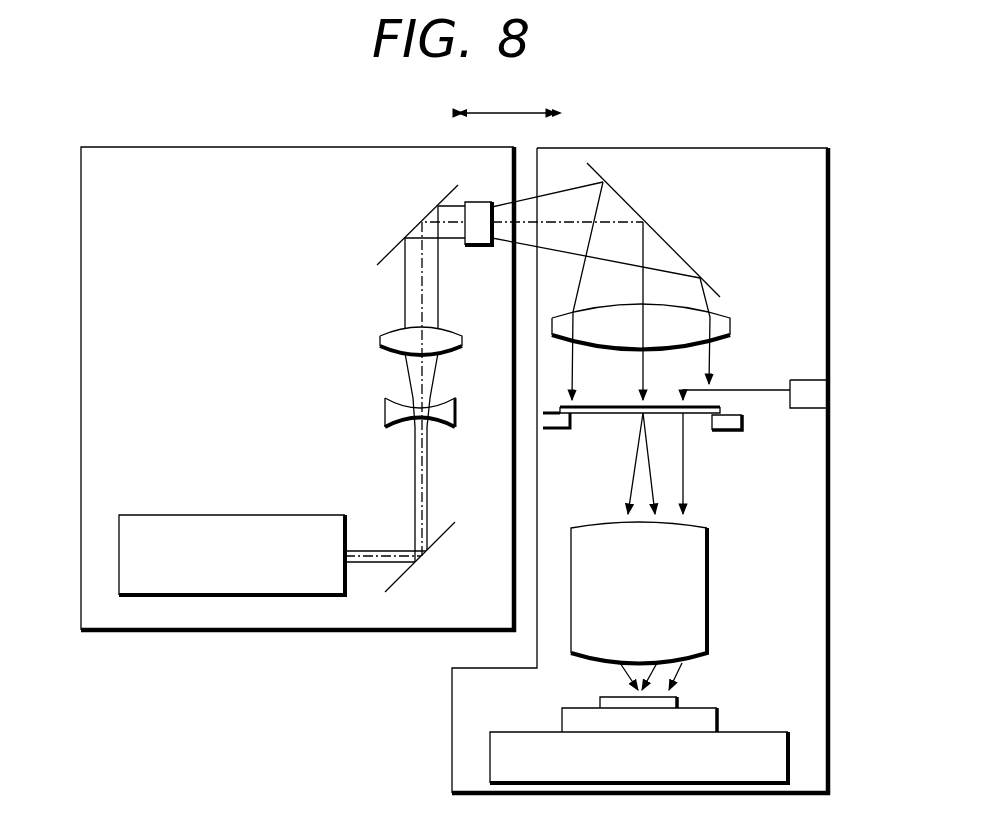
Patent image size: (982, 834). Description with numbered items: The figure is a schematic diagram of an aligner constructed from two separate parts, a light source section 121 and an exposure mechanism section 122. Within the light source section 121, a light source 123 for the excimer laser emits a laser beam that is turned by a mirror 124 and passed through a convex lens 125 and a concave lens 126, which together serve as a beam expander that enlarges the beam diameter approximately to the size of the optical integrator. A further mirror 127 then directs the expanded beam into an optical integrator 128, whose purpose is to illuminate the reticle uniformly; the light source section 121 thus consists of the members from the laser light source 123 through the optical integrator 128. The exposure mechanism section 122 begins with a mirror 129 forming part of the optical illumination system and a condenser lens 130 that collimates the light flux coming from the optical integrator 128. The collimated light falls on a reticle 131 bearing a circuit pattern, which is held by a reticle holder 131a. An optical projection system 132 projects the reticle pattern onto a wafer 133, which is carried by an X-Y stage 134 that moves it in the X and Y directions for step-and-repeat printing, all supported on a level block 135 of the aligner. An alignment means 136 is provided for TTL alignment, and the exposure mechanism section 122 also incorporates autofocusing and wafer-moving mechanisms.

The light source section 121 is at (81, 414).
The exposure mechanism section 122 is at (818, 185).
The light source 123 is at (195, 518).
The mirror 124 is at (447, 523).
The convex lens 125 is at (388, 408).
The concave lens 126 is at (380, 340).
The mirror 127 is at (390, 246).
The optical integrator 128 is at (477, 208).
The mirror 129 is at (675, 248).
The condenser lens 130 is at (720, 323).
The reticle 131 is at (730, 410).
The reticle holder 131a is at (727, 432).
The optical projection system 132 is at (700, 580).
The wafer 133 is at (678, 697).
The X-Y stage 134 is at (713, 717).
The level block 135 is at (780, 757).
The alignment means 136 is at (822, 395).